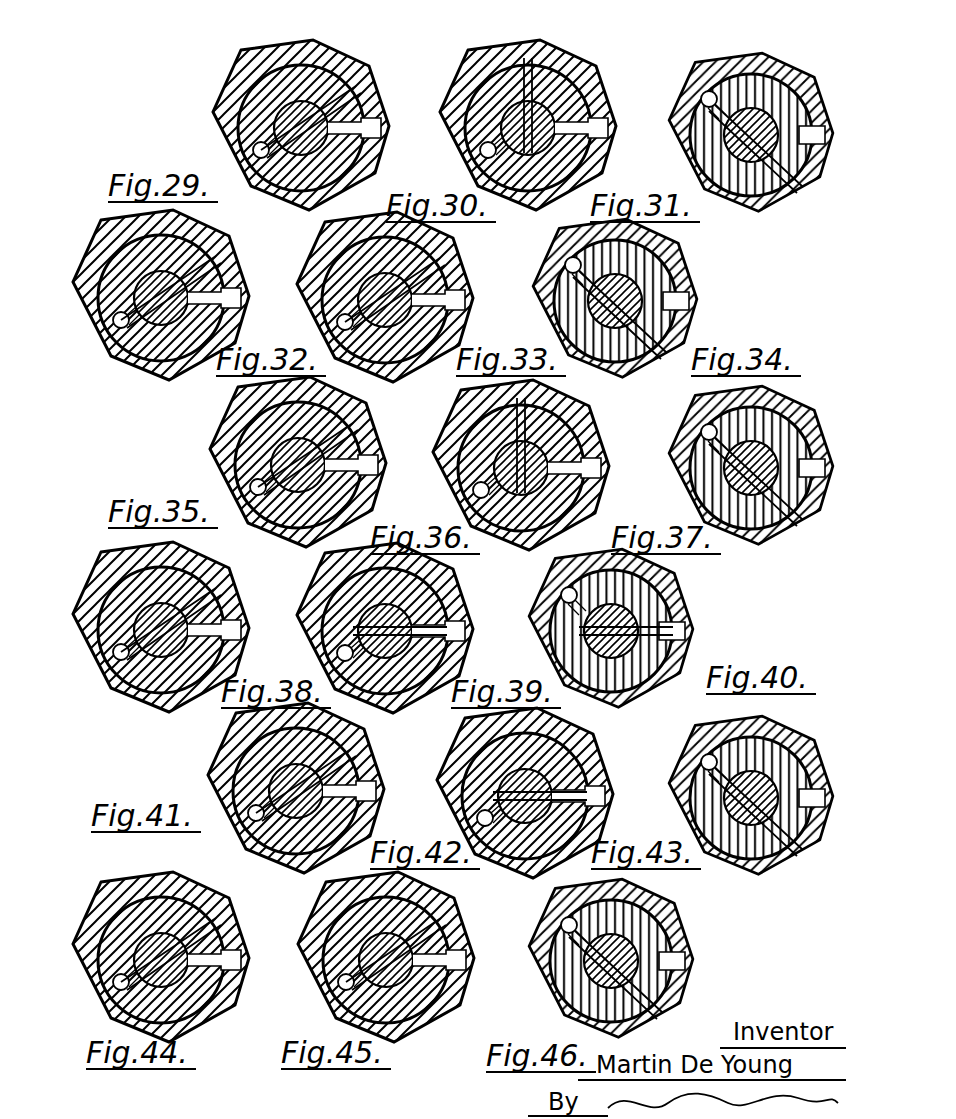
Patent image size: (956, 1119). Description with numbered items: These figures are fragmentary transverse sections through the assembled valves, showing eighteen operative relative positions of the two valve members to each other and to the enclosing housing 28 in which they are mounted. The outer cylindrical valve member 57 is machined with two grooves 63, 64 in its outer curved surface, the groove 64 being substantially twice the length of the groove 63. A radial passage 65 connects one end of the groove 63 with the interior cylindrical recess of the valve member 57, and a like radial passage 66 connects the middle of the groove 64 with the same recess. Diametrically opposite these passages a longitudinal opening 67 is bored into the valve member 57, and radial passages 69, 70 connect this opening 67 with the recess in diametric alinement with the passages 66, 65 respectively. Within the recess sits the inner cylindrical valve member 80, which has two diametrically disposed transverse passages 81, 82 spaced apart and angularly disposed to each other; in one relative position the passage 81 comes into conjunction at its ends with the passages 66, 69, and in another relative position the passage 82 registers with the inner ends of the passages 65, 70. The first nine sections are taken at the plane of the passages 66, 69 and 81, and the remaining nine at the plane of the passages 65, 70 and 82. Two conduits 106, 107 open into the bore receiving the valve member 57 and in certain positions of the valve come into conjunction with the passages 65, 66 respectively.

In FIG. 29, the casing 28 is at (370, 81).
In FIG. 30, the casing 28 is at (528, 125).
In FIG. 31, the casing 28 is at (796, 59).
In FIG. 32, the casing 28 is at (161, 295).
In FIG. 33, the casing 28 is at (296, 262).
In FIG. 34, the casing 28 is at (685, 258).
In FIG. 35, the casing 28 is at (211, 421).
In FIG. 36, the casing 28 is at (521, 465).
In FIG. 37, the casing 28 is at (666, 421).
In FIG. 38, the casing 28 is at (100, 553).
In FIG. 39, the casing 28 is at (320, 570).
In FIG. 40, the casing 28 is at (548, 574).
In FIG. 41, the casing 28 is at (208, 750).
In FIG. 42, the casing 28 is at (545, 728).
In FIG. 43, the casing 28 is at (790, 740).
In FIG. 44, the casing 28 is at (96, 887).
In FIG. 45, the casing 28 is at (307, 902).
In FIG. 46, the casing 28 is at (632, 892).
In FIG. 29, the cylindrical valve member 57 is at (246, 102).
In FIG. 30, the cylindrical valve member 57 is at (528, 128).
In FIG. 31, the cylindrical valve member 57 is at (693, 129).
In FIG. 32, the cylindrical valve member 57 is at (111, 261).
In FIG. 33, the cylindrical valve member 57 is at (345, 253).
In FIG. 34, the cylindrical valve member 57 is at (643, 258).
In FIG. 35, the cylindrical valve member 57 is at (241, 446).
In FIG. 36, the cylindrical valve member 57 is at (476, 425).
In FIG. 37, the cylindrical valve member 57 is at (709, 422).
In FIG. 38, the cylindrical valve member 57 is at (112, 592).
In FIG. 39, the cylindrical valve member 57 is at (331, 601).
In FIG. 40, the cylindrical valve member 57 is at (643, 593).
In FIG. 41, the cylindrical valve member 57 is at (239, 769).
In FIG. 42, the cylindrical valve member 57 is at (474, 761).
In FIG. 43, the cylindrical valve member 57 is at (727, 742).
In FIG. 44, the cylindrical valve member 57 is at (112, 923).
In FIG. 45, the cylindrical valve member 57 is at (357, 906).
In FIG. 46, the cylindrical valve member 57 is at (587, 905).
In FIG. 38, the groove 63 is at (199, 559).
In FIG. 39, the groove 63 is at (442, 580).
In FIG. 40, the groove 63 is at (666, 668).
In FIG. 41, the groove 63 is at (236, 841).
In FIG. 42, the groove 63 is at (594, 778).
In FIG. 43, the groove 63 is at (805, 815).
In FIG. 44, the groove 63 is at (201, 891).
In FIG. 45, the groove 63 is at (442, 907).
In FIG. 46, the groove 63 is at (677, 974).
In FIG. 29, the groove 64 is at (350, 66).
In FIG. 30, the groove 64 is at (590, 87).
In FIG. 31, the groove 64 is at (770, 190).
In FIG. 32, the groove 64 is at (198, 226).
In FIG. 33, the groove 64 is at (346, 355).
In FIG. 34, the groove 64 is at (681, 314).
In FIG. 35, the groove 64 is at (342, 399).
In FIG. 36, the groove 64 is at (587, 481).
In FIG. 37, the groove 64 is at (775, 520).
In FIG. 38, the radial passage 65 is at (202, 588).
In FIG. 39, the radial passage 65 is at (433, 602).
In FIG. 40, the radial passage 65 is at (622, 679).
In FIG. 41, the radial passage 65 is at (320, 732).
In FIG. 42, the radial passage 65 is at (576, 795).
In FIG. 43, the radial passage 65 is at (765, 845).
In FIG. 44, the radial passage 65 is at (208, 929).
In FIG. 45, the radial passage 65 is at (433, 928).
In FIG. 46, the radial passage 65 is at (653, 984).
In FIG. 29, the radial passage 66 is at (350, 101).
In FIG. 30, the radial passage 66 is at (555, 71).
In FIG. 31, the radial passage 66 is at (784, 170).
In FIG. 32, the radial passage 66 is at (202, 255).
In FIG. 33, the radial passage 66 is at (434, 274).
In FIG. 34, the radial passage 66 is at (589, 350).
In FIG. 35, the radial passage 66 is at (343, 429).
In FIG. 36, the radial passage 66 is at (546, 509).
In FIG. 37, the radial passage 66 is at (793, 492).
In FIG. 45, the radial passage 66 is at (434, 971).
In FIG. 29, the longitudinal opening 67 is at (245, 142).
In FIG. 30, the longitudinal opening 67 is at (478, 142).
In FIG. 31, the longitudinal opening 67 is at (700, 90).
In FIG. 32, the longitudinal opening 67 is at (105, 312).
In FIG. 33, the longitudinal opening 67 is at (330, 312).
In FIG. 34, the longitudinal opening 67 is at (560, 260).
In FIG. 35, the longitudinal opening 67 is at (243, 479).
In FIG. 36, the longitudinal opening 67 is at (468, 478).
In FIG. 37, the longitudinal opening 67 is at (698, 430).
In FIG. 38, the longitudinal opening 67 is at (105, 644).
In FIG. 39, the longitudinal opening 67 is at (330, 640).
In FIG. 40, the longitudinal opening 67 is at (553, 588).
In FIG. 41, the longitudinal opening 67 is at (248, 810).
In FIG. 42, the longitudinal opening 67 is at (470, 808).
In FIG. 43, the longitudinal opening 67 is at (698, 755).
In FIG. 44, the longitudinal opening 67 is at (105, 974).
In FIG. 45, the longitudinal opening 67 is at (330, 970).
In FIG. 46, the longitudinal opening 67 is at (556, 915).
In FIG. 29, the radial passage 69 is at (262, 160).
In FIG. 30, the radial passage 69 is at (492, 132).
In FIG. 32, the radial passage 69 is at (215, 240).
In FIG. 33, the radial passage 69 is at (349, 304).
In FIG. 34, the radial passage 69 is at (579, 305).
In FIG. 35, the radial passage 69 is at (262, 475).
In FIG. 36, the radial passage 69 is at (485, 472).
In FIG. 37, the radial passage 69 is at (760, 410).
In FIG. 38, the radial passage 70 is at (125, 640).
In FIG. 39, the radial passage 70 is at (349, 635).
In FIG. 40, the radial passage 70 is at (570, 618).
In FIG. 41, the radial passage 70 is at (260, 800).
In FIG. 42, the radial passage 70 is at (489, 800).
In FIG. 44, the radial passage 70 is at (125, 964).
In FIG. 45, the radial passage 70 is at (360, 900).
In FIG. 46, the radial passage 70 is at (640, 915).
In FIG. 29, the cylindrical valve member 80 is at (293, 147).
In FIG. 30, the cylindrical valve member 80 is at (515, 150).
In FIG. 31, the cylindrical valve member 80 is at (740, 155).
In FIG. 32, the cylindrical valve member 80 is at (150, 317).
In FIG. 33, the cylindrical valve member 80 is at (380, 320).
In FIG. 34, the cylindrical valve member 80 is at (600, 293).
In FIG. 35, the cylindrical valve member 80 is at (292, 484).
In FIG. 36, the cylindrical valve member 80 is at (515, 487).
In FIG. 37, the cylindrical valve member 80 is at (735, 460).
In FIG. 38, the cylindrical valve member 80 is at (140, 615).
In FIG. 39, the cylindrical valve member 80 is at (380, 650).
In FIG. 40, the cylindrical valve member 80 is at (625, 615).
In FIG. 41, the cylindrical valve member 80 is at (262, 783).
In FIG. 42, the cylindrical valve member 80 is at (495, 780).
In FIG. 43, the cylindrical valve member 80 is at (750, 770).
In FIG. 44, the cylindrical valve member 80 is at (165, 975).
In FIG. 45, the cylindrical valve member 80 is at (355, 960).
In FIG. 46, the cylindrical valve member 80 is at (580, 948).
In FIG. 29, the passage 81 is at (308, 105).
In FIG. 30, the passage 81 is at (535, 105).
In FIG. 31, the passage 81 is at (758, 112).
In FIG. 32, the passage 81 is at (168, 275).
In FIG. 33, the passage 81 is at (392, 277).
In FIG. 34, the passage 81 is at (640, 282).
In FIG. 35, the passage 81 is at (320, 450).
In FIG. 36, the passage 81 is at (508, 400).
In FIG. 37, the passage 81 is at (740, 460).
In FIG. 38, the passage 82 is at (168, 607).
In FIG. 39, the passage 82 is at (392, 625).
In FIG. 40, the passage 82 is at (590, 625).
In FIG. 41, the passage 82 is at (303, 770).
In FIG. 42, the passage 82 is at (530, 790).
In FIG. 43, the passage 82 is at (758, 815).
In FIG. 44, the passage 82 is at (160, 940).
In FIG. 45, the passage 82 is at (396, 954).
In FIG. 46, the passage 82 is at (640, 940).
In FIG. 38, the passage or conduit 106 is at (225, 622).
In FIG. 39, the passage or conduit 106 is at (447, 623).
In FIG. 40, the passage or conduit 106 is at (673, 623).
In FIG. 41, the passage or conduit 106 is at (358, 783).
In FIG. 42, the passage or conduit 106 is at (587, 788).
In FIG. 43, the passage or conduit 106 is at (813, 790).
In FIG. 44, the passage or conduit 106 is at (223, 952).
In FIG. 45, the passage or conduit 106 is at (448, 952).
In FIG. 46, the passage or conduit 106 is at (673, 953).
In FIG. 29, the passage or conduit 107 is at (373, 122).
In FIG. 30, the passage or conduit 107 is at (590, 120).
In FIG. 31, the passage or conduit 107 is at (813, 127).
In FIG. 32, the passage or conduit 107 is at (225, 290).
In FIG. 33, the passage or conduit 107 is at (447, 292).
In FIG. 34, the passage or conduit 107 is at (680, 293).
In FIG. 35, the passage or conduit 107 is at (365, 457).
In FIG. 36, the passage or conduit 107 is at (585, 460).
In FIG. 37, the passage or conduit 107 is at (813, 460).